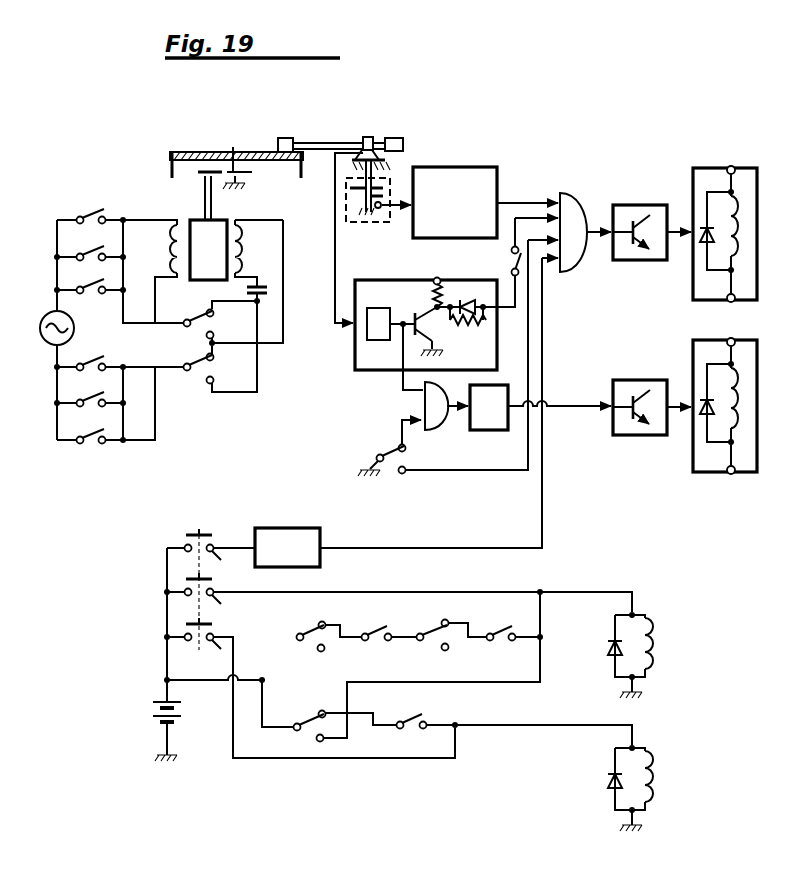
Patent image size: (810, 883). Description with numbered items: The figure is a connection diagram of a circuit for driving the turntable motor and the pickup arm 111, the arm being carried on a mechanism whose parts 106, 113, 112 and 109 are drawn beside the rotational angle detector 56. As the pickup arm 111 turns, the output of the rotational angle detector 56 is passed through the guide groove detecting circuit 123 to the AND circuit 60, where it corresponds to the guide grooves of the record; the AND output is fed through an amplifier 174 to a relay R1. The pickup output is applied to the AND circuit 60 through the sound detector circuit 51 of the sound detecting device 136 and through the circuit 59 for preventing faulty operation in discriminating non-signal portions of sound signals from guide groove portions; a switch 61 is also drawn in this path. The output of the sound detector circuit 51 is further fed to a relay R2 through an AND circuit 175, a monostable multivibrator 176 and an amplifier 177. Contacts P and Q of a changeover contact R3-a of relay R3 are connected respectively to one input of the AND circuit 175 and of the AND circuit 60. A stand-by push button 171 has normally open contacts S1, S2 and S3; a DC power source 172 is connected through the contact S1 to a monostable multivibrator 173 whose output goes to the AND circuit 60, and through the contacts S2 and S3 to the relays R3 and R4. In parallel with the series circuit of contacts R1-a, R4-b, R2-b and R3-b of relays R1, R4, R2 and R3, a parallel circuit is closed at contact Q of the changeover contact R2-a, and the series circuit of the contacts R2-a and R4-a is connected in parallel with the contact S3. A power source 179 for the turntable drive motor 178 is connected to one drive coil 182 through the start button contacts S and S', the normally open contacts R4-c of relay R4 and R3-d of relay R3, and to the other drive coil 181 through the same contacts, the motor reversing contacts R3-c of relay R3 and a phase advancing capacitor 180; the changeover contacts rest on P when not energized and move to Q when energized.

The support bar 106 is at (190, 153).
The link 113 is at (278, 150).
The connecting rod 112 is at (283, 138).
The pickup arm 111 is at (334, 143).
The bar end 109 is at (281, 162).
The rotational angle detector 56 is at (366, 222).
The guide groove detecting circuit 123 is at (487, 159).
The AND circuit 60 is at (579, 198).
The switch 61 is at (512, 256).
The amplifier 174 is at (640, 207).
The amplifier 177 is at (640, 381).
The relay R1 is at (698, 168).
The relay R2 is at (712, 474).
The sound detecting device 136 is at (355, 343).
The sound detector circuit 51 is at (385, 308).
The circuit for preventing faulty operation 59 is at (441, 282).
The AND circuit 175 is at (447, 428).
The monostable multivibrator 176 is at (486, 430).
The changeover contact R3-a is at (381, 457).
The stand-by push button 171 is at (226, 526).
The contact S1 is at (211, 562).
The contact S2 is at (399, 606).
The contact S3 is at (311, 696).
The DC power source 172 is at (159, 722).
The monostable multivibrator 173 is at (288, 528).
The contact R1-a is at (317, 623).
The contact R4-b is at (386, 618).
The contact R2-b is at (447, 647).
The contact R3-b is at (509, 618).
The changeover contact R2-a is at (333, 723).
The contact R4-a is at (513, 714).
The relay R3 is at (647, 620).
The relay R4 is at (647, 753).
The contact of start button S is at (90, 207).
The contact of start button S' is at (90, 353).
The normally open contact R4-c is at (90, 319).
The normally open contact R3-d is at (90, 355).
The motor reversing contact R3-c is at (217, 306).
The power source 179 is at (74, 321).
The drive coil 182 is at (150, 271).
The turntable drive motor 178 is at (192, 220).
The drive coil 181 is at (252, 254).
The phase advancing capacitor 180 is at (268, 292).